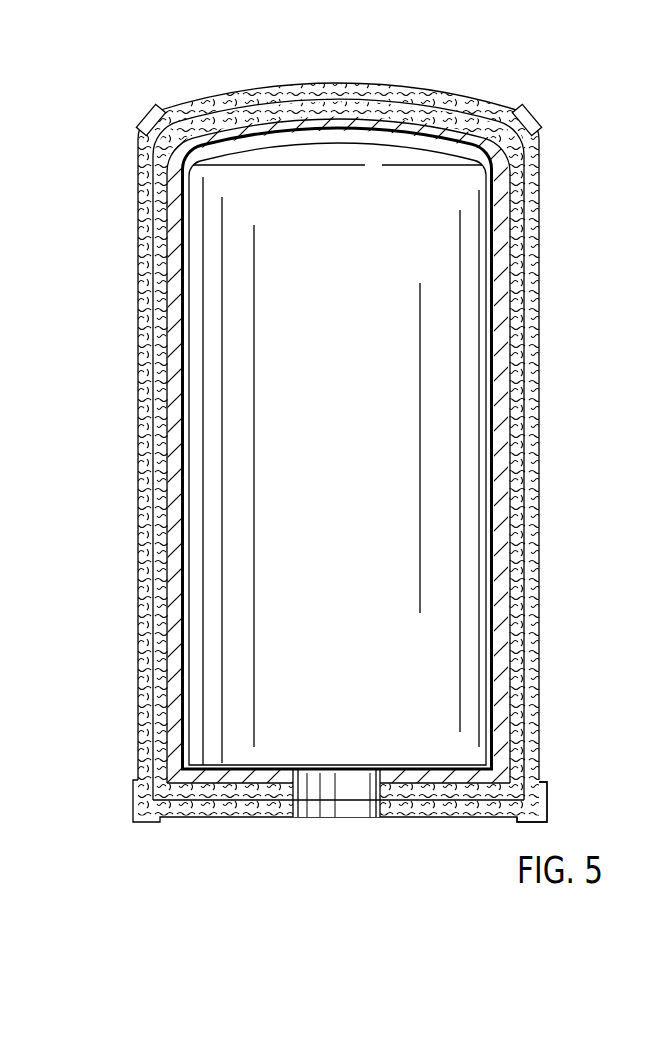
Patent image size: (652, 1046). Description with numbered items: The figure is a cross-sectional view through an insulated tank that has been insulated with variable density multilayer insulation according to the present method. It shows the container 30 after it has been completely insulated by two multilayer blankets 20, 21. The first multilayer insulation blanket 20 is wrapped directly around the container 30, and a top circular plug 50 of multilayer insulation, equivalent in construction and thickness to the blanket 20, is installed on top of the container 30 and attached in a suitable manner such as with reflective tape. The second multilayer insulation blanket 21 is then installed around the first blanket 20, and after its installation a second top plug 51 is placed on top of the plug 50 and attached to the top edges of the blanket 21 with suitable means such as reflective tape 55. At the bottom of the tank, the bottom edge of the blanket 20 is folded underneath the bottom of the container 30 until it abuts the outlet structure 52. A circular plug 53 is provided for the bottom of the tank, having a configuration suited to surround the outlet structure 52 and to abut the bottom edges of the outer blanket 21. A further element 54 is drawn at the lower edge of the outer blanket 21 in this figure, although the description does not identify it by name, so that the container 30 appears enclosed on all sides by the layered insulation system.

The multilayer insulation blanket 20 is at (508, 462).
The multilayer insulation blanket 21 is at (540, 486).
The container 30 is at (498, 400).
The top circular plug 50 is at (240, 110).
The second top plug 51 is at (450, 93).
The outlet structure 52 is at (332, 812).
The circular plug 53 is at (433, 812).
The bottom rim 54 is at (548, 800).
The reflective tape 55 is at (535, 110).